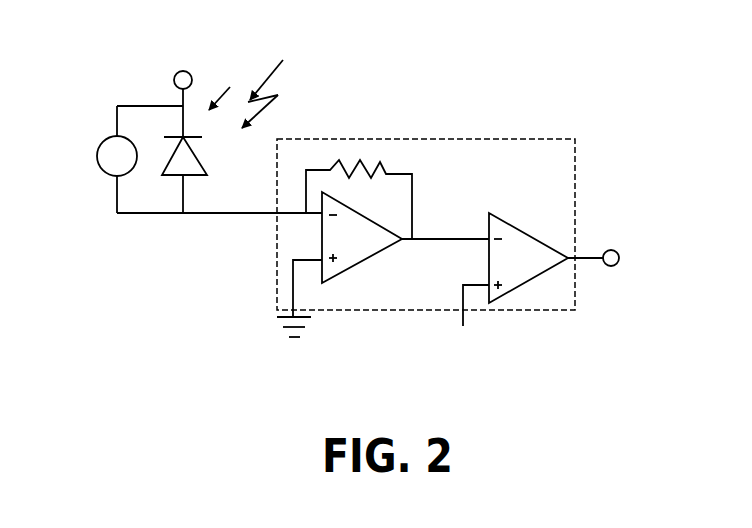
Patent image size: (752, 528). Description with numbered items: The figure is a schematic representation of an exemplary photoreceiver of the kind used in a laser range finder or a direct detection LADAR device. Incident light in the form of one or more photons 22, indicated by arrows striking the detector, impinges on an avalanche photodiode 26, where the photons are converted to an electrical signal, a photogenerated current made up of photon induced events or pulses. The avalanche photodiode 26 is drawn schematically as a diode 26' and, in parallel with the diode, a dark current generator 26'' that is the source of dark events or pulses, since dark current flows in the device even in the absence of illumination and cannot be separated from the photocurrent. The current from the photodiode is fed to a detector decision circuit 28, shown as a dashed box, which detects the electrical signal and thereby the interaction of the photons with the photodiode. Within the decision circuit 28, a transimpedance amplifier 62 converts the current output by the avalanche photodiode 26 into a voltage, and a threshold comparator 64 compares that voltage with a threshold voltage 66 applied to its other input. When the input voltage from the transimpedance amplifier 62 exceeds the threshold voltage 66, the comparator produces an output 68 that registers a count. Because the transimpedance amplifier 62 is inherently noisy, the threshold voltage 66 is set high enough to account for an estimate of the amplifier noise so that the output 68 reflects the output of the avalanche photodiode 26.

The photons 22 is at (270, 81).
The avalanche photodiode 26 is at (229, 87).
The diode 26' is at (208, 159).
The dark current generator 26'' is at (92, 162).
The detector decision circuit 28 is at (462, 139).
The transimpedance amplifier 62 is at (373, 257).
The threshold comparator 64 is at (501, 220).
The threshold voltage 66 is at (461, 325).
The output 68 is at (617, 252).